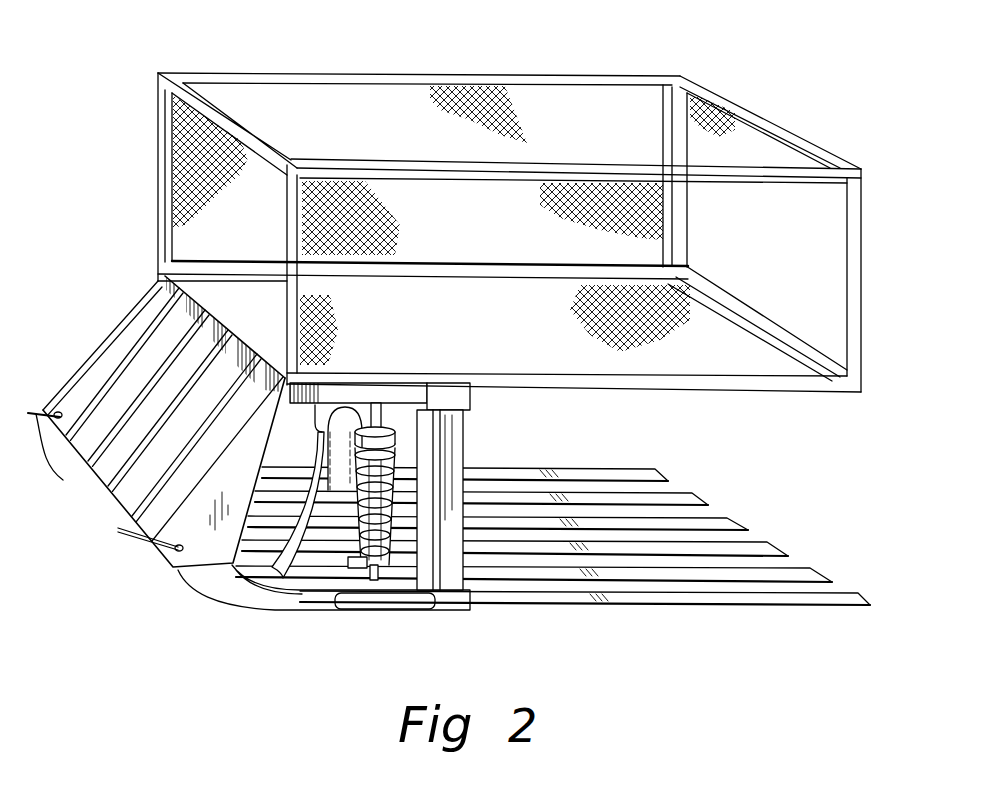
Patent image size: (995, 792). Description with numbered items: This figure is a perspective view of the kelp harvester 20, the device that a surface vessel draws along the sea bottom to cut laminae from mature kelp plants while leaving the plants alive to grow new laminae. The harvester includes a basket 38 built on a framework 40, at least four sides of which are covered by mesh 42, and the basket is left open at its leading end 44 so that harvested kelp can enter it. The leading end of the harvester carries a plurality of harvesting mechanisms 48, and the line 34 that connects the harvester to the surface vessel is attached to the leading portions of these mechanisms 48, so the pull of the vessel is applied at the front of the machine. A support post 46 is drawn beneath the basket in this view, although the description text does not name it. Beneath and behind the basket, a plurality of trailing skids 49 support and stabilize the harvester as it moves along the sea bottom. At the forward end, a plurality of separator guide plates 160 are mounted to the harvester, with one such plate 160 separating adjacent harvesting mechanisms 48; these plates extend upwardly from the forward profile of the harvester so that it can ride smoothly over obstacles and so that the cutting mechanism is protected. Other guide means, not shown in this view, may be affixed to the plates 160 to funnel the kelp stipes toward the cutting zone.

The kelp harvester 20 is at (150, 239).
The line 34 is at (118, 527).
The basket 38 is at (327, 64).
The framework 40 is at (158, 74).
The mesh 42 is at (527, 97).
The leading end 44 is at (223, 197).
The support post 46 is at (452, 557).
The harvesting mechanism 48 is at (305, 583).
The trailing skid 49 is at (640, 597).
The separator guide plate 160 is at (120, 387).